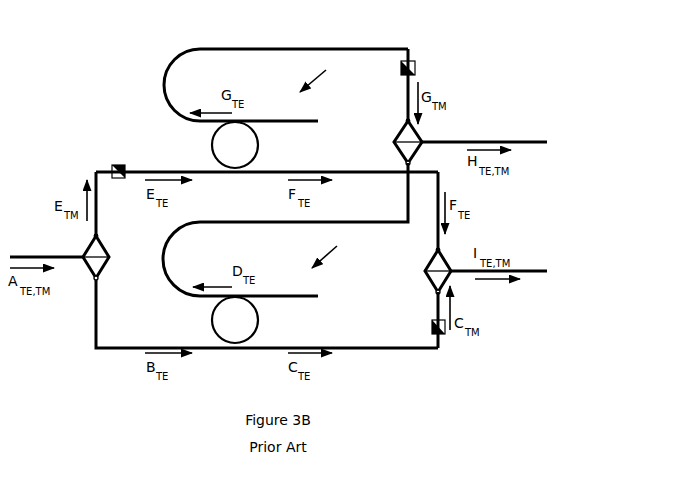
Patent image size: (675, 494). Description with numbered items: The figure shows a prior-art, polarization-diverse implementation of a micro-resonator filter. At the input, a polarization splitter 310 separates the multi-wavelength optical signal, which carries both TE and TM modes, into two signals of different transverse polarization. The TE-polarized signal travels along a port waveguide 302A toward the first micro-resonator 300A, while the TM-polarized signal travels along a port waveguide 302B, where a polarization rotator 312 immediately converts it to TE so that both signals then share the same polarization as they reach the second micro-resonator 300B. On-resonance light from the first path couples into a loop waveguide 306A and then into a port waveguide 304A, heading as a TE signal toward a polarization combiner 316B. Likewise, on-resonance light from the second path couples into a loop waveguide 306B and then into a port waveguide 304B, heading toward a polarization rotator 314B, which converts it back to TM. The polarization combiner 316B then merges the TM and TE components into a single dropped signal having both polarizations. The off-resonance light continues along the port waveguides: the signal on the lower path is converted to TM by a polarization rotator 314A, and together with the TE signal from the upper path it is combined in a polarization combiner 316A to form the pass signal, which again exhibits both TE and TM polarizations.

The micro-resonator 300A is at (349, 253).
The micro-resonator 300B is at (335, 78).
The port waveguide 302A is at (125, 349).
The port waveguide 302B is at (165, 166).
The port waveguide 304A is at (278, 293).
The port waveguide 304B is at (277, 119).
The loop waveguide 306A is at (218, 329).
The loop waveguide 306B is at (218, 154).
The polarization splitter 310 is at (85, 251).
The polarization rotator 312 is at (113, 164).
The polarization rotator 314A is at (447, 341).
The polarization rotator 314B is at (416, 62).
The polarization combiner 316A is at (432, 286).
The polarization combiner 316B is at (396, 144).